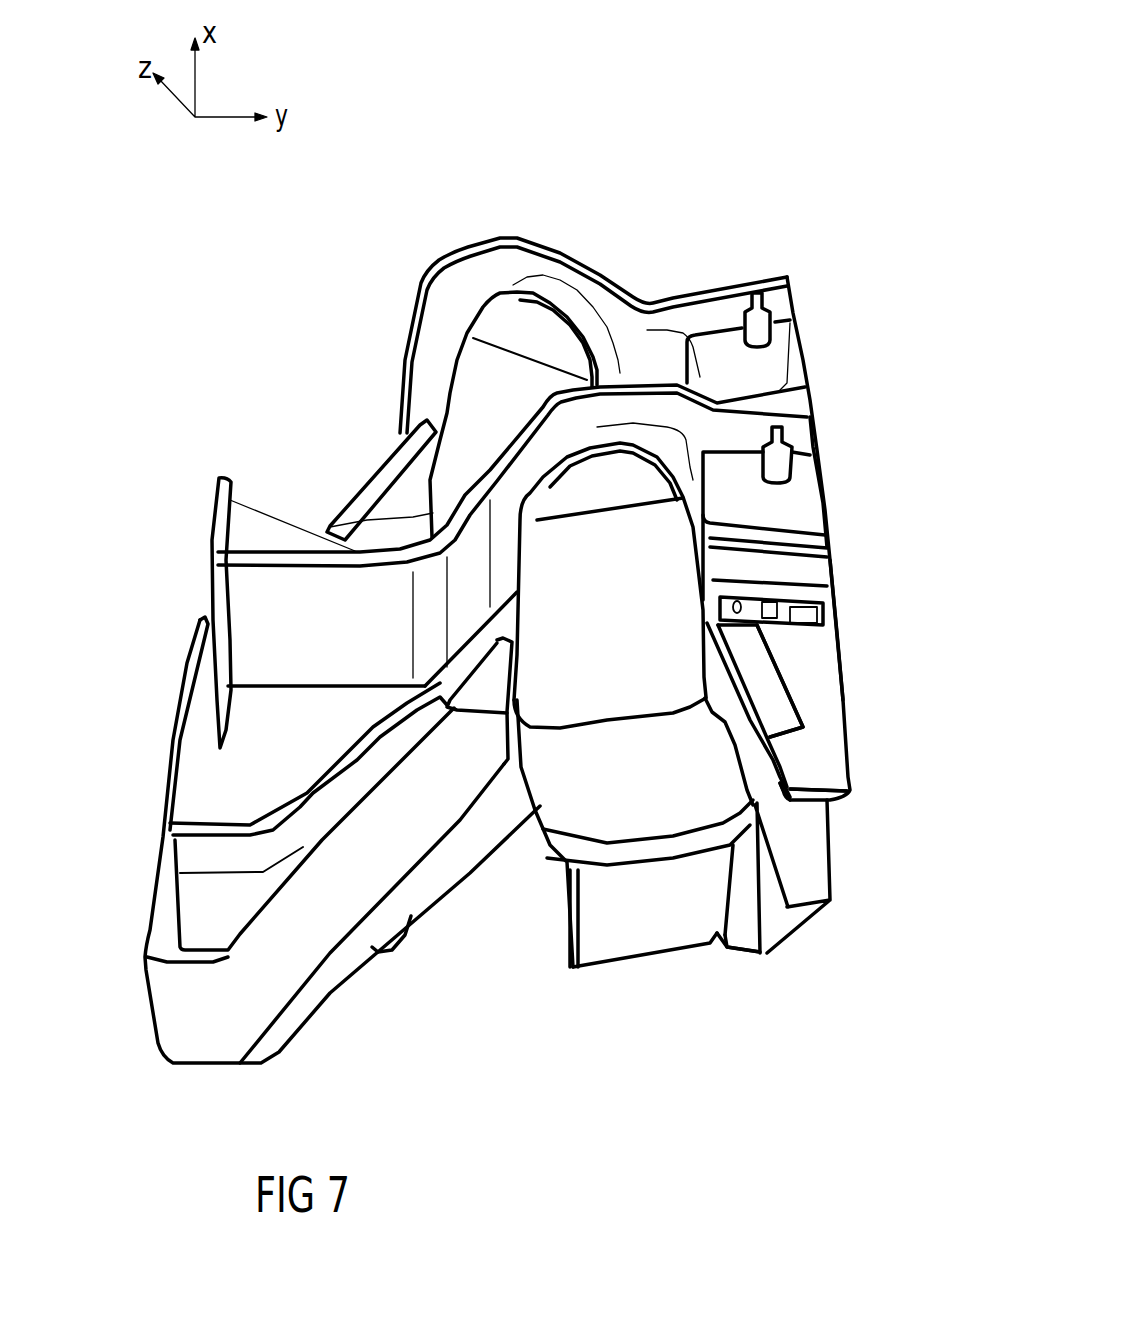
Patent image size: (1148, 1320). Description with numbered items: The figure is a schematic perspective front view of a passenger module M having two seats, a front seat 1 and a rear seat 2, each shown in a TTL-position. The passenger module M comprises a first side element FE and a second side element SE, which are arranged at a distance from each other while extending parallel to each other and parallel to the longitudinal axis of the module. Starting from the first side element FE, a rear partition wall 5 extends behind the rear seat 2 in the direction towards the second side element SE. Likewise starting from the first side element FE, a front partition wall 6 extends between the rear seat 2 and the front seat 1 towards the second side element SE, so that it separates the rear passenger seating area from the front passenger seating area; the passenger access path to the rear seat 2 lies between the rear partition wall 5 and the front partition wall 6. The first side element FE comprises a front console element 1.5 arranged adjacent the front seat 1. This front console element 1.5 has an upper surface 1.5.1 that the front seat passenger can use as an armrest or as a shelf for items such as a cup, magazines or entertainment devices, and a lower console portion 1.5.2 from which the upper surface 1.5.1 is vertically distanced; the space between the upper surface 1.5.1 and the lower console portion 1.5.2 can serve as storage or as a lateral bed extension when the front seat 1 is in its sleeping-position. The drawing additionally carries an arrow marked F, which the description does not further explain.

The front seat 1 is at (490, 945).
The rear seat 2 is at (310, 388).
The rear partition wall 5 is at (549, 236).
The front partition wall 6 is at (632, 368).
The passenger module M is at (830, 260).
The second side element SE is at (148, 788).
The first side element FE is at (855, 645).
The front console element 1.5 is at (827, 697).
The upper surface 1.5.1 is at (827, 763).
The lower console portion 1.5.2 is at (817, 857).
The force direction F is at (531, 990).